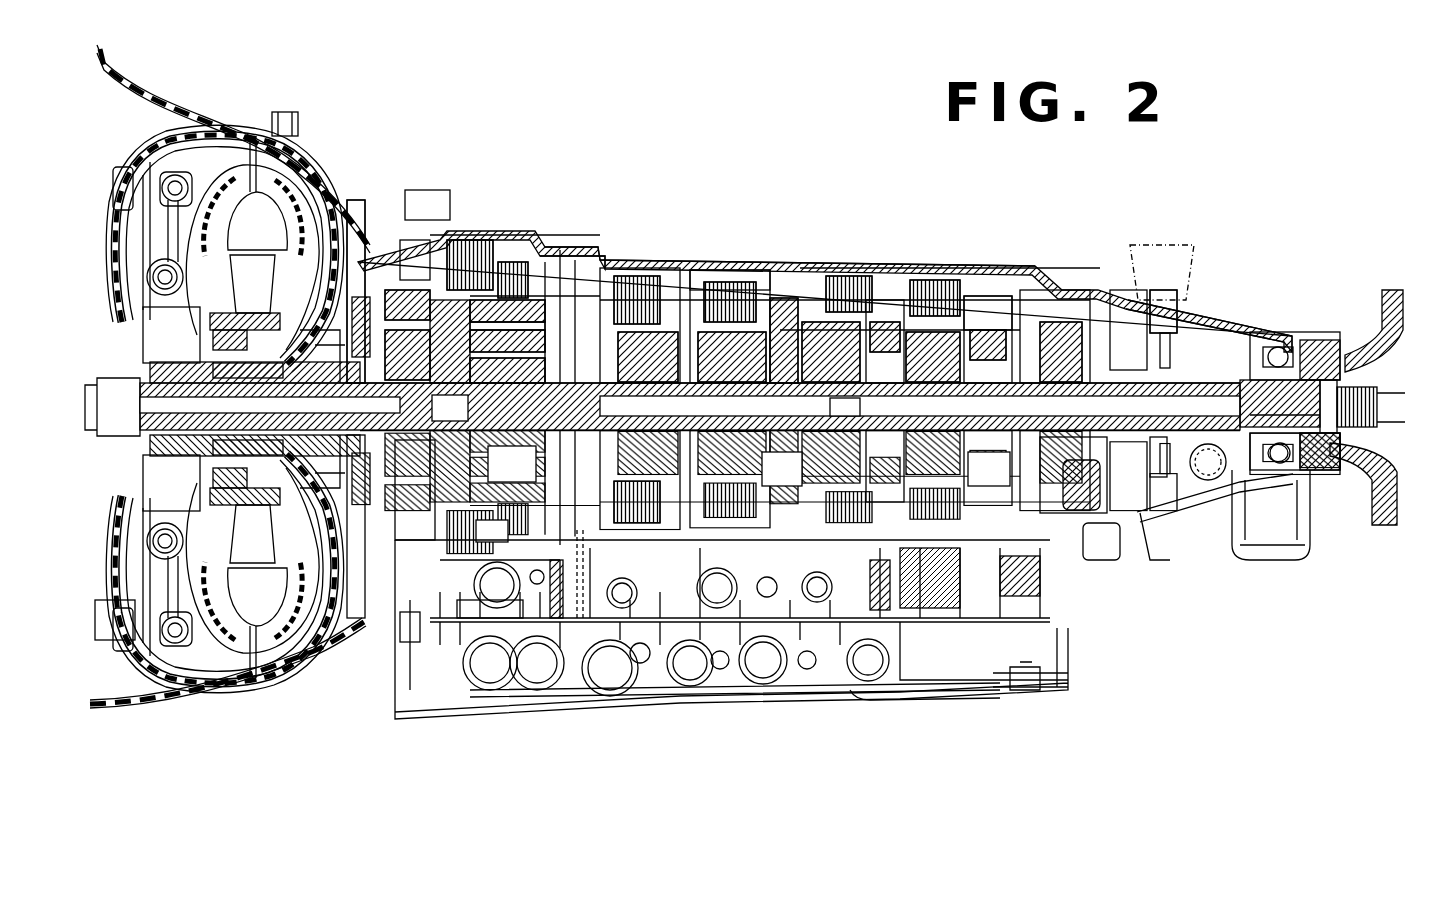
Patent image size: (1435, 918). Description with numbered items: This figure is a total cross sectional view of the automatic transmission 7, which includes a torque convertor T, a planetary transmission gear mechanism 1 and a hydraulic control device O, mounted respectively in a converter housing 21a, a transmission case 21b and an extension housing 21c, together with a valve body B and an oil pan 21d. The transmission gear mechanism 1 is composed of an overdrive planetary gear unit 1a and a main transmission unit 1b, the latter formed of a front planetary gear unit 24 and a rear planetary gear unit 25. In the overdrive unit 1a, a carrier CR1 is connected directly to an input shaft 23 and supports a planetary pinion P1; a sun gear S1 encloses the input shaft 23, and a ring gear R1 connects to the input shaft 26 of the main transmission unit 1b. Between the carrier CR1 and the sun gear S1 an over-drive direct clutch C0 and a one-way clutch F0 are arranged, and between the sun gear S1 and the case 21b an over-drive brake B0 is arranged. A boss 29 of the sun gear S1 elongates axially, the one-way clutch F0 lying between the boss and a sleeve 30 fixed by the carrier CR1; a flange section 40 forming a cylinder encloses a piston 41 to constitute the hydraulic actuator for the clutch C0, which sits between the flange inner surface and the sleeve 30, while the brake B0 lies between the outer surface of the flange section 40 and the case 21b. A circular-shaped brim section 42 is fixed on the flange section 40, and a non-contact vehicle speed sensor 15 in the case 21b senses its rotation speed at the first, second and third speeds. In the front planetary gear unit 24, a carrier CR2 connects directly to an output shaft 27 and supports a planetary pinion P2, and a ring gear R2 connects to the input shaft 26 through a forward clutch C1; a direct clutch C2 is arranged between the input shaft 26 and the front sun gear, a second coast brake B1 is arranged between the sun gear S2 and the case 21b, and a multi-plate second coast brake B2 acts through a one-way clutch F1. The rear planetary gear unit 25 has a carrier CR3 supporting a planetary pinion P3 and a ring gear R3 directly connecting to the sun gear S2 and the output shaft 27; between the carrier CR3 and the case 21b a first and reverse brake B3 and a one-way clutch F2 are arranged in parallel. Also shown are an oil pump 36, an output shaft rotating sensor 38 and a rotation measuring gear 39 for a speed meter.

The torque convertor T is at (318, 139).
The converter housing 21a is at (340, 172).
The transmission case 21b is at (578, 258).
The extension housing 21c is at (1218, 318).
The oil pan 21d is at (916, 690).
The planetary transmission gear mechanism 1 is at (784, 228).
The overdrive planetary gear unit 1a is at (534, 207).
The main transmission unit 1b is at (947, 251).
The automatic transmission 7 is at (800, 205).
The vehicle speed sensor 15 is at (430, 192).
The brim section 42 is at (413, 240).
The oil pump 36 is at (365, 279).
The flange section 40 is at (370, 298).
The input shaft 23 is at (358, 356).
The over-drive brake B0 is at (455, 242).
The over-drive direct clutch C0 is at (490, 262).
The ring gear R1 is at (528, 300).
The carrier CR1 is at (507, 307).
The planetary pinion P1 is at (534, 330).
The sun gear S1 is at (548, 358).
The direct clutch C2 is at (612, 276).
The input shaft 26 is at (648, 332).
The forward clutch C1 is at (704, 282).
The carrier CR2 is at (720, 332).
The ring gear R2 is at (742, 290).
The front planetary gear unit 24 is at (778, 298).
The planetary pinion P2 is at (812, 322).
The 2nd coast brake B2 is at (846, 276).
The one-way clutch F2 is at (882, 322).
The 1st & Rev. brake B3 is at (925, 280).
The planetary pinion P3 is at (940, 332).
The ring gear R3 is at (990, 296).
The rear planetary gear unit 25 is at (1000, 330).
The carrier CR3 is at (1052, 322).
The output shaft rotating sensor 38 is at (1160, 258).
The output shaft 27 is at (1306, 385).
The rotation measuring gear 39 is at (1208, 482).
The one-way clutch F0 is at (450, 408).
The one-way clutch F1 is at (845, 406).
The sun gear S2 is at (886, 469).
The sleeve 30 is at (512, 464).
The boss 29 is at (492, 532).
The piston 41 is at (408, 612).
The 2nd coast brake B1 is at (655, 543).
The hydraulic control device O is at (765, 720).
The valve body B is at (860, 692).